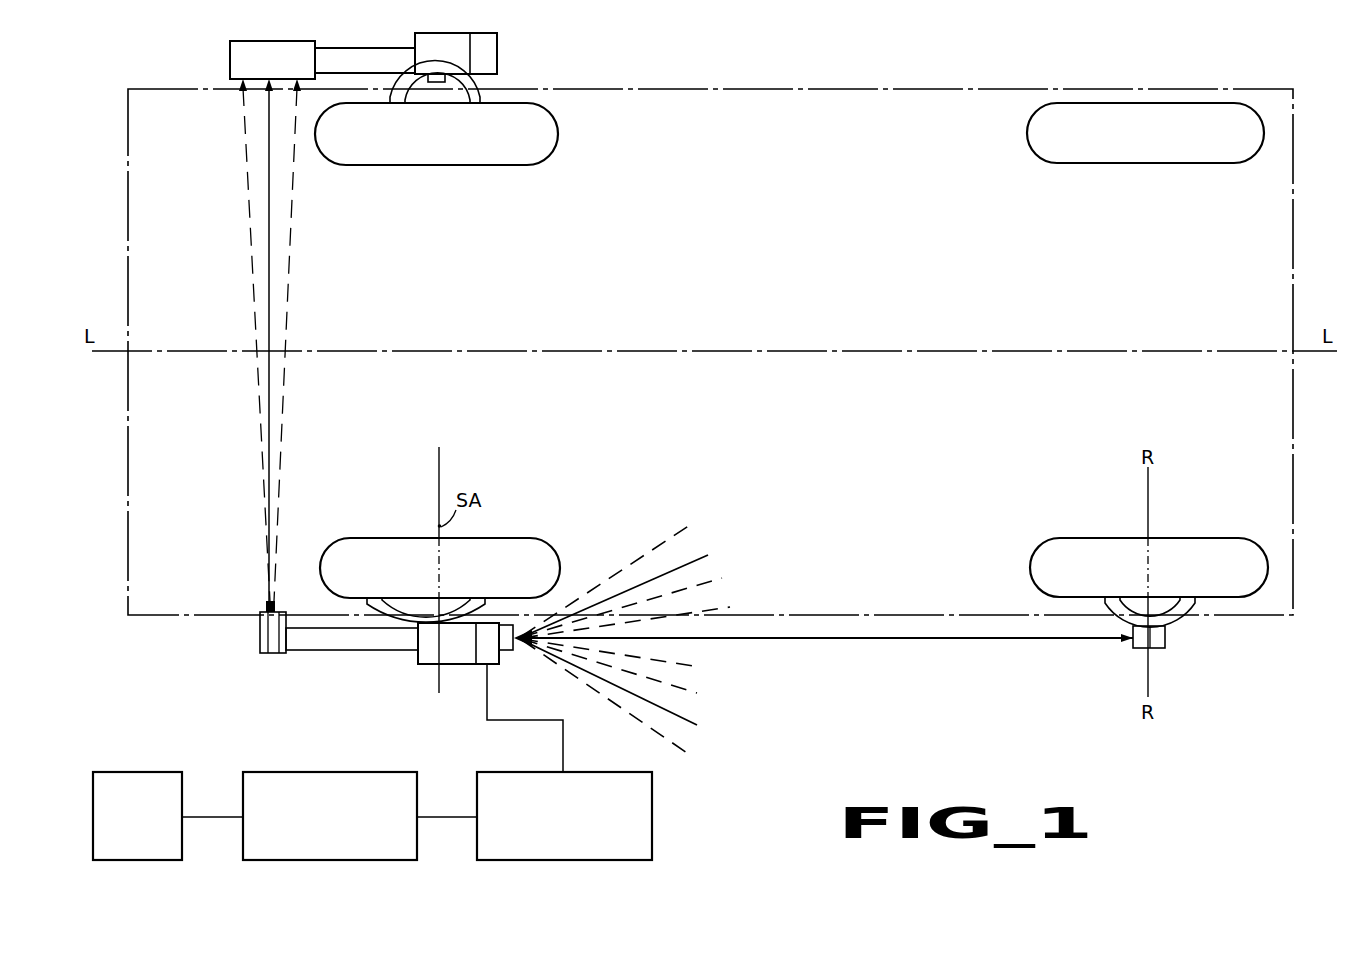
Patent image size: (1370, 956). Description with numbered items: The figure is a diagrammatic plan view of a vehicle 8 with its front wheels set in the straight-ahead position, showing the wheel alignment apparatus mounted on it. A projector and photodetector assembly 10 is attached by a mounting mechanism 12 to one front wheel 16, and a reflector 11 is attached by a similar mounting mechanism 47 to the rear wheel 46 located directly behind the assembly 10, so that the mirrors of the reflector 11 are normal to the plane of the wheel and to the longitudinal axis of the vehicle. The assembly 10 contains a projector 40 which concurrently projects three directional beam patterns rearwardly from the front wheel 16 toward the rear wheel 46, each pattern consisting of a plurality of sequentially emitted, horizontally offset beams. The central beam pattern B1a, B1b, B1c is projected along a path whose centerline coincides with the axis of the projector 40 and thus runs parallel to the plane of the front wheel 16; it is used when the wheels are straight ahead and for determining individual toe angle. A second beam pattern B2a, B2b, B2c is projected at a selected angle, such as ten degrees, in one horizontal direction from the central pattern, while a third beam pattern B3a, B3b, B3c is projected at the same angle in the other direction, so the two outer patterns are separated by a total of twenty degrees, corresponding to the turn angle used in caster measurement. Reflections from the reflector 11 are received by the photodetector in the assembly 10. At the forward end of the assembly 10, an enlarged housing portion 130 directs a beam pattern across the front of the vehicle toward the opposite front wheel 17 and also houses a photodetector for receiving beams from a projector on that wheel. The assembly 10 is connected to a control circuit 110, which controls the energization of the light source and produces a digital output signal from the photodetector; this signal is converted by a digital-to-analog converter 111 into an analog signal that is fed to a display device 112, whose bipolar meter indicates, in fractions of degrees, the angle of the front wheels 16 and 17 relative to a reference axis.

The vehicle 8 is at (790, 89).
The front wheel 17 is at (496, 157).
The front wheel 16 is at (512, 541).
The mounting mechanism 12 is at (373, 601).
The projector and photodetector assembly 10 is at (402, 659).
The projector 40 is at (516, 656).
The enlarged housing portion 130 is at (258, 641).
The rear wheel 46 is at (1217, 581).
The mounting mechanism 47 is at (1165, 614).
The reflector 11 is at (1170, 651).
The control circuit 110 is at (645, 843).
The digital-to-analog converter 111 is at (313, 781).
The display device 112 is at (120, 771).
The beam B1a is at (746, 640).
The beam B1b is at (714, 609).
The beam B1c is at (714, 671).
The beam B2a is at (700, 557).
The beam B2b is at (686, 529).
The beam B2c is at (712, 580).
The beam B3a is at (704, 724).
The beam B3b is at (710, 694).
The beam B3c is at (692, 752).